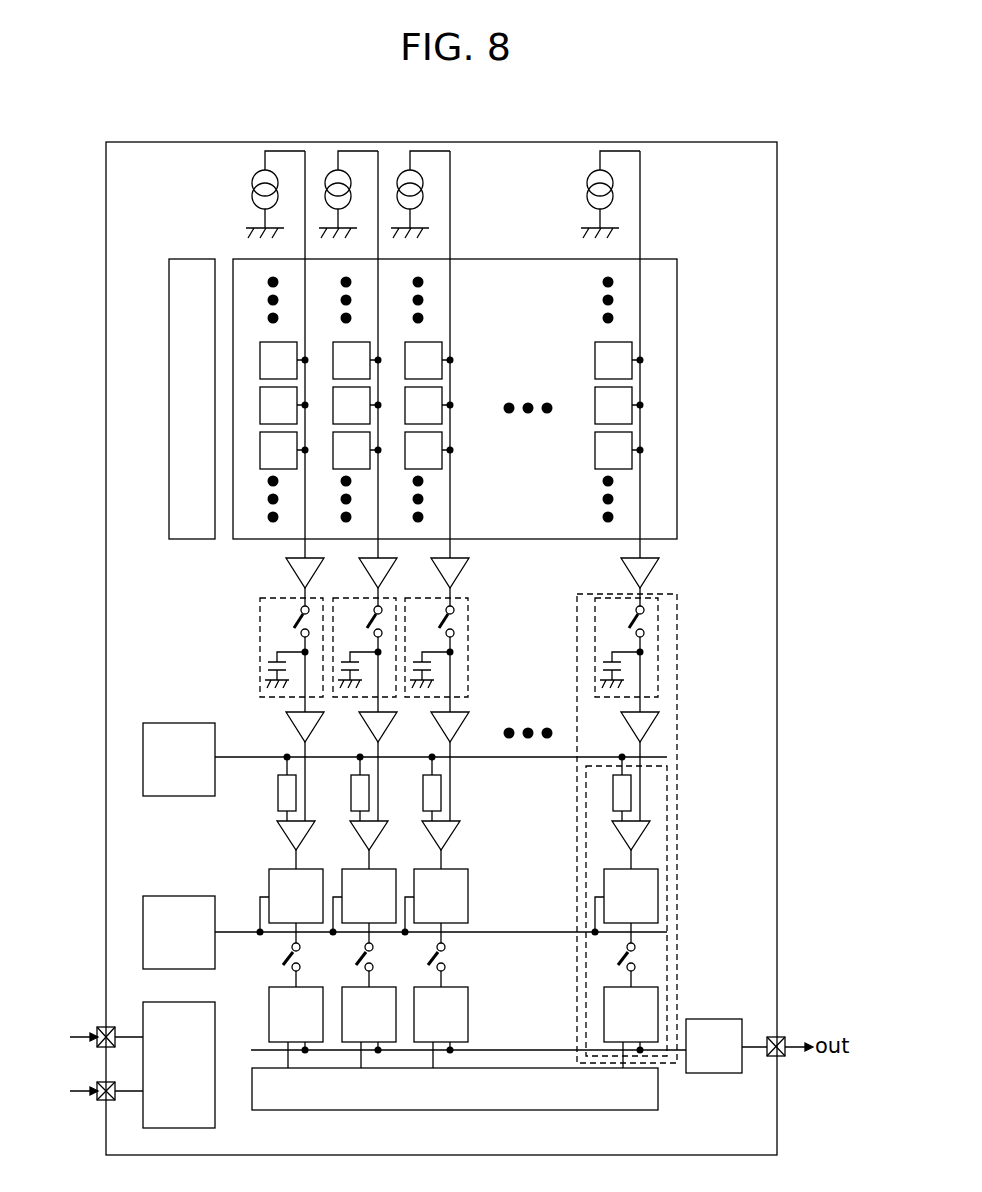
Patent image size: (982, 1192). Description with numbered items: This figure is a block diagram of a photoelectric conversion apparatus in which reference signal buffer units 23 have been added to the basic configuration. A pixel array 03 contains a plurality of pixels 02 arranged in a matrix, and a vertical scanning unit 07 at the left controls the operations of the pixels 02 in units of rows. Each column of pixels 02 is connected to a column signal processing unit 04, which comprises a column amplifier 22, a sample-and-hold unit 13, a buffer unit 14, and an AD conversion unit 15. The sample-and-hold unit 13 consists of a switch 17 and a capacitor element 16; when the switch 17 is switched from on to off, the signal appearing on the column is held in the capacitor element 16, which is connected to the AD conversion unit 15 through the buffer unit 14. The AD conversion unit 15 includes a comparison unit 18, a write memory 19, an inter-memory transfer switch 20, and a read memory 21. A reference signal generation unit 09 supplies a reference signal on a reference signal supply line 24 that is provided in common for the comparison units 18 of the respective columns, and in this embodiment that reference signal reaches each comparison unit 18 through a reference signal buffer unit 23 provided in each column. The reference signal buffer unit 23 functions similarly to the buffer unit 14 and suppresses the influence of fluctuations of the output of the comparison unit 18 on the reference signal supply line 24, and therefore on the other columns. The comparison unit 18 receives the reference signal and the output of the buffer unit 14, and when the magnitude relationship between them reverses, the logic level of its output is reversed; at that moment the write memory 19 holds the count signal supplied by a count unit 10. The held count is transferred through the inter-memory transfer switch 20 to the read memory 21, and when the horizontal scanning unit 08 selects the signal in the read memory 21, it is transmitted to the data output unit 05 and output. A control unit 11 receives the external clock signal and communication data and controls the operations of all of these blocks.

The data output unit 05 is at (612, 191).
The vertical scanning unit 07 is at (169, 388).
The pixel array 03 is at (677, 396).
The column signal processing unit 04 is at (640, 495).
The pixel 02 is at (622, 372).
The column amplifier 22 is at (659, 568).
The sample-and-hold unit 13 is at (658, 604).
The switch 17 is at (295, 620).
The capacitor element 16 is at (268, 662).
The buffer unit 14 is at (659, 724).
The reference signal generation unit 09 is at (143, 735).
The reference signal supply line 24 is at (667, 766).
The AD conversion unit 15 is at (667, 810).
The reference signal buffer unit 23 is at (278, 797).
The comparison unit 18 is at (641, 840).
The write memory 19 is at (658, 876).
The count unit 10 is at (143, 905).
The inter-memory transfer switch 20 is at (641, 957).
The read memory 21 is at (658, 994).
The horizontal scanning unit 08 is at (658, 1110).
The control unit 11 is at (215, 1128).